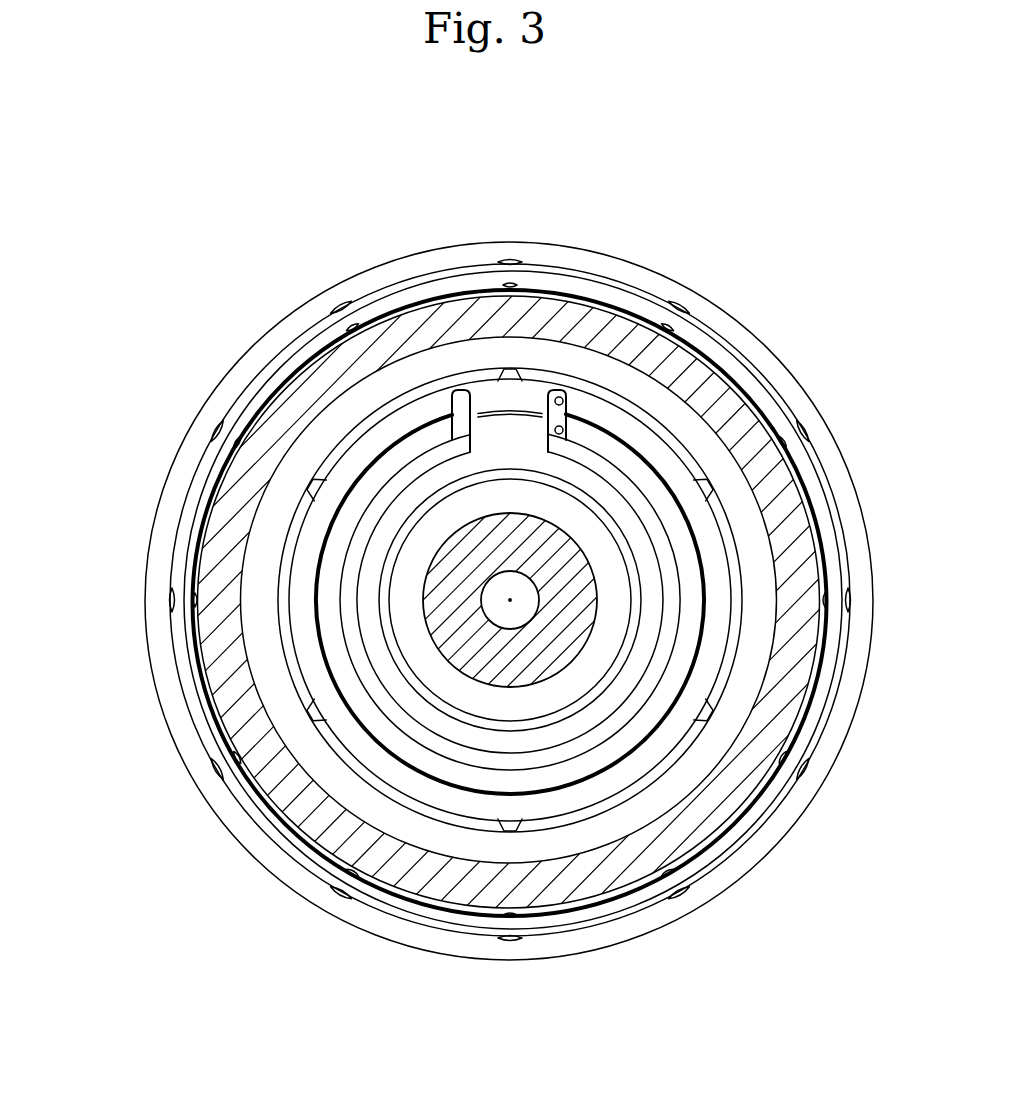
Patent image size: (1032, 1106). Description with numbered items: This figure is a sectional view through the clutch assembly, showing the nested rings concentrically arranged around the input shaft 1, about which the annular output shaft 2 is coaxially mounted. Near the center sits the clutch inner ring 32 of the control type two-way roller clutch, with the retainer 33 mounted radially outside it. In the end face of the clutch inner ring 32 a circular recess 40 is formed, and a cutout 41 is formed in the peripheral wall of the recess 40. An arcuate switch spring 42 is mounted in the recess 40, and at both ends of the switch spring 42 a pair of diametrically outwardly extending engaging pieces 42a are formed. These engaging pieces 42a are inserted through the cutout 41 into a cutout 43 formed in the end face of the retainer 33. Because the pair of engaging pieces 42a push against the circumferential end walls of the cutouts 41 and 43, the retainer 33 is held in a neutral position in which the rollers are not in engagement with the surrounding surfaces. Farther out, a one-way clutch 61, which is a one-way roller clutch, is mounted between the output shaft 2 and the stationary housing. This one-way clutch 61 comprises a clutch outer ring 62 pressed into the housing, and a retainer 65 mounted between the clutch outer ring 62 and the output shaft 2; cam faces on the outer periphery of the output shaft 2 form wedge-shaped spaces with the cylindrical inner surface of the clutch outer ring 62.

The input shaft 1 is at (458, 646).
The output shaft 2 is at (343, 842).
The clutch inner ring 32 is at (317, 563).
The retainer 33 is at (330, 497).
The circular recess 40 is at (403, 479).
The cutout 41 is at (585, 397).
The switch spring 42 is at (613, 473).
The engaging pieces 42a is at (550, 398).
The cutout 43 is at (562, 395).
The one-way clutch 61 is at (146, 651).
The clutch outer ring 62 is at (167, 697).
The retainer 65 is at (212, 742).